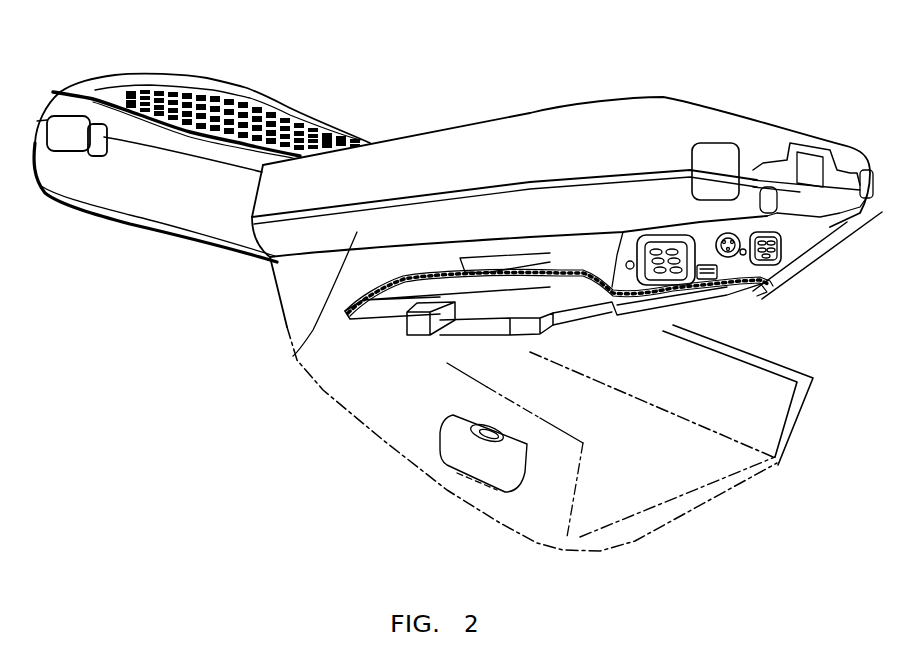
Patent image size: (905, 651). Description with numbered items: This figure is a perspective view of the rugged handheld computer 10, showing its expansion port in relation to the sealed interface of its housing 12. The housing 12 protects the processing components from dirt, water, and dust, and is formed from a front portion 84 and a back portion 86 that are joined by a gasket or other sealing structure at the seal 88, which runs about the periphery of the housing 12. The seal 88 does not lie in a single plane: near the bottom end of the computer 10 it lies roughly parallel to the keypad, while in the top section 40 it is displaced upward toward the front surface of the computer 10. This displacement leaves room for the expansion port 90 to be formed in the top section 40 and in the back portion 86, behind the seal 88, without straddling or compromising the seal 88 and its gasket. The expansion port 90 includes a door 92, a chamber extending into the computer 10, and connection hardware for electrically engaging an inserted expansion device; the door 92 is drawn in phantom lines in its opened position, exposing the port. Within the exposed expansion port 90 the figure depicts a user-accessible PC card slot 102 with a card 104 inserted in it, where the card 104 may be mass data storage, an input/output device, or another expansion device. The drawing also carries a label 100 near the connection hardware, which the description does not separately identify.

The computer 10 is at (196, 279).
The housing 12 is at (432, 140).
The top section 40 is at (561, 277).
The front portion 84 is at (607, 117).
The back portion 86 is at (293, 357).
The seal 88 is at (527, 183).
The expansion port 90 is at (708, 392).
The door 92 is at (443, 490).
The connector panel 100 is at (697, 292).
The PC card slot 102 is at (416, 330).
The card 104 is at (510, 314).